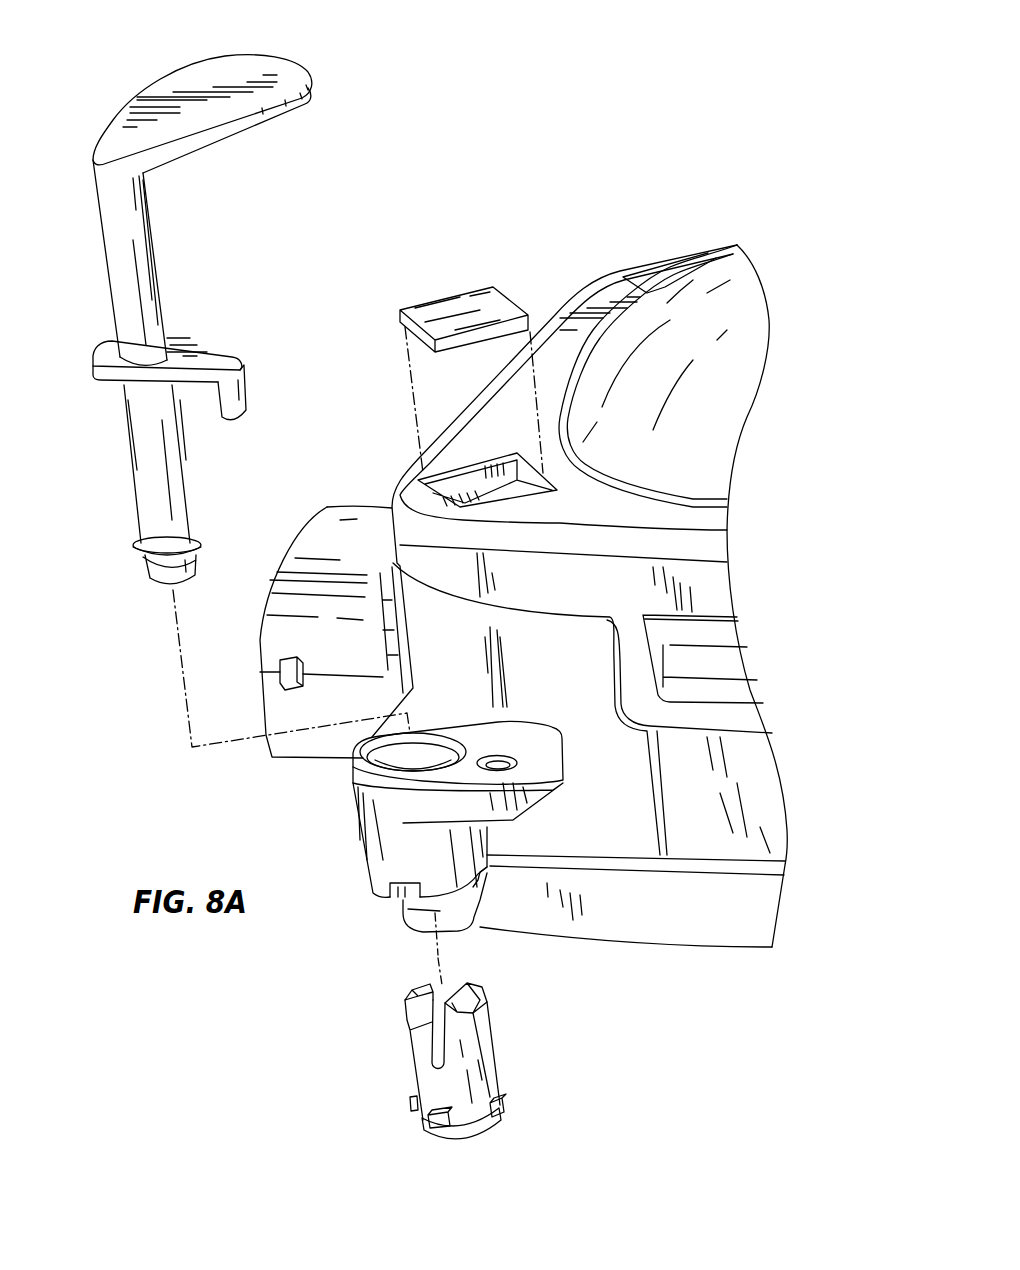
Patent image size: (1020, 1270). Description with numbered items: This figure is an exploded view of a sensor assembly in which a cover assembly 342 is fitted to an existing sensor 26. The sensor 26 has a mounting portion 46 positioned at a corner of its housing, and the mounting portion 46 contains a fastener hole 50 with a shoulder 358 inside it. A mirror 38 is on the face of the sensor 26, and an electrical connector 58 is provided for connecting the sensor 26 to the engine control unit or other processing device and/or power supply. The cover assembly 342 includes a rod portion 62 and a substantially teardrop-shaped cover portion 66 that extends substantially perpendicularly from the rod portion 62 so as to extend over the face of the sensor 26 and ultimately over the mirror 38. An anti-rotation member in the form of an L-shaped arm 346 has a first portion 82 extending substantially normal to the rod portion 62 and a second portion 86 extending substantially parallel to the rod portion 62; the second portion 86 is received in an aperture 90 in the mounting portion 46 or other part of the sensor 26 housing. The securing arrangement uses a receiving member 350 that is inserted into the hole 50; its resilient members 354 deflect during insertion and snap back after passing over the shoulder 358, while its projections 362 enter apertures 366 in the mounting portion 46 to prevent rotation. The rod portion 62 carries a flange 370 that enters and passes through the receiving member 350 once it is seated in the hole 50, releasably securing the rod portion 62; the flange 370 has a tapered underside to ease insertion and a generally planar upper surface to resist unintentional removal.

The sensor 26 is at (707, 573).
The mirror 38 is at (423, 308).
The mounting portion 46 is at (350, 798).
The hole 50 is at (408, 731).
The electrical connector 58 is at (310, 533).
The rod portion 62 is at (118, 237).
The cover portion 66 is at (187, 70).
The first portion 82 is at (113, 378).
The second portion 86 is at (235, 393).
The aperture 90 is at (495, 765).
The cover assembly 342 is at (152, 633).
The arm 346 is at (190, 337).
The receiving member 350 is at (455, 1081).
The resilient members 354 is at (413, 1040).
The shoulder 358 is at (437, 757).
The projections 362 is at (504, 1104).
The apertures 366 is at (402, 900).
The flange 370 is at (137, 547).